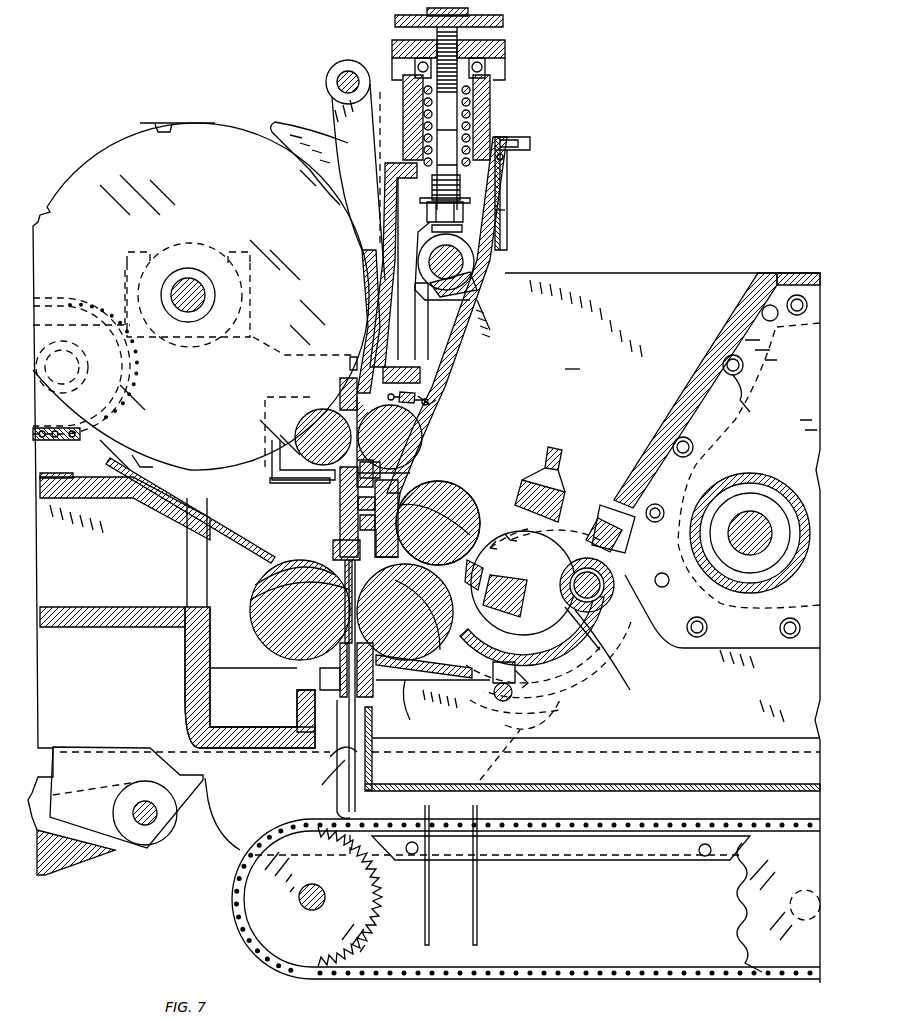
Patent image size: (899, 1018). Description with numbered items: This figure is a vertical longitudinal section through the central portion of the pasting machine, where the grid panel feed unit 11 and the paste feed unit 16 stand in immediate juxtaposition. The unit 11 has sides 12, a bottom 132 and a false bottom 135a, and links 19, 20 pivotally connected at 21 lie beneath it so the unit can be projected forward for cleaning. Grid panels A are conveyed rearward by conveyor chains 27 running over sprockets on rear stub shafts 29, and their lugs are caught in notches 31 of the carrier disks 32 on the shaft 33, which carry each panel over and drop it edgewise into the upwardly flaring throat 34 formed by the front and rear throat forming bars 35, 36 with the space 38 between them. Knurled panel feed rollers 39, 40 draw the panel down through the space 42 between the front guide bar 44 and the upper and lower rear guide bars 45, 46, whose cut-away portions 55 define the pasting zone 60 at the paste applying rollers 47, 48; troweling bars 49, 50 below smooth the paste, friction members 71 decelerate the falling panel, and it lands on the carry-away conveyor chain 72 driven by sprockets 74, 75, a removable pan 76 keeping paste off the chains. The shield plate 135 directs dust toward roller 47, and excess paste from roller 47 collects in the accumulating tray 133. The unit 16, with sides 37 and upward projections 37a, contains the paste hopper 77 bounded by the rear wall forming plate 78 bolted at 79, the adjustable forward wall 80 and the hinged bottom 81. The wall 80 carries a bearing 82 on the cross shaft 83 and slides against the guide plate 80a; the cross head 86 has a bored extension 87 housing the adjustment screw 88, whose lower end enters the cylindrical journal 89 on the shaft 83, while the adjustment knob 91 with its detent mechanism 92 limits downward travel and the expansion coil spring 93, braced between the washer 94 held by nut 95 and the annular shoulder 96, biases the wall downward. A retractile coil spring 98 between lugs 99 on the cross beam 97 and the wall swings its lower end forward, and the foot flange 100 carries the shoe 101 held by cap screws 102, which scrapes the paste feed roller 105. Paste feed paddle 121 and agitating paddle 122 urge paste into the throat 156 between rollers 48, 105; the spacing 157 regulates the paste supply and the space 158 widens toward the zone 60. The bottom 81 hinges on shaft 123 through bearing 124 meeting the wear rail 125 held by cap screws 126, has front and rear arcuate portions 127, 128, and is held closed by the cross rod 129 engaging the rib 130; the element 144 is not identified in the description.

The grid panel feed unit 11 is at (59, 682).
The sides 12 is at (80, 578).
The paste feed unit 16 is at (778, 269).
The link 19 is at (70, 870).
The link 20 is at (80, 755).
The pivotal connection 21 is at (140, 825).
The conveyor chains 27 is at (48, 443).
The rear sprocket carrying stub shafts 29 is at (125, 371).
The notches 31 is at (170, 125).
The transfer or carrier disks 32 is at (105, 155).
The shaft 33 is at (190, 283).
The receiving throat 34 is at (350, 357).
The front throat forming bar 35 is at (340, 395).
The rear throat forming bar 36 is at (400, 368).
The sides 37 is at (614, 275).
The upward projections 37a is at (500, 206).
The space 38 is at (345, 400).
The panel feed roller 39 is at (312, 436).
The panel feed roller 40 is at (412, 433).
The space 42 is at (345, 480).
The front guide bar 44 is at (358, 500).
The upper rear guide bar 45 is at (415, 480).
The lower rear guide bar 46 is at (360, 533).
The paste applying roller 47 is at (265, 630).
The paste applying roller 48 is at (440, 612).
The troweling bar 49 is at (300, 692).
The troweling bar 50 is at (365, 695).
The cut-away portions 55 is at (300, 572).
The pasting zone 60 is at (345, 600).
The friction members 71 is at (340, 762).
The carry-away conveyor chain 72 is at (628, 826).
The sprocket 74 is at (260, 930).
The sprocket 75 is at (735, 930).
The removable pan 76 is at (585, 792).
The paste hopper 77 is at (572, 361).
The rear wall forming plate 78 is at (680, 392).
The bolts 79 is at (693, 440).
The forward adjustable hopper wall 80 is at (470, 300).
The guide plate 80a is at (505, 216).
The bottom 81 is at (580, 650).
The bearing 82 is at (478, 290).
The cross shaft 83 is at (466, 260).
The cross head 86 is at (500, 162).
The vertically bored extension 87 is at (488, 104).
The adjustment screw 88 is at (458, 135).
The cylindrical journal 89 is at (470, 240).
The adjustment knob 91 is at (400, 48).
The detent mechanism 92 is at (503, 58).
The expansion coil spring 93 is at (490, 118).
The washer 94 is at (461, 190).
The nut 95 is at (464, 212).
The annular shoulder 96 is at (482, 68).
The cross beam 97 is at (375, 212).
The retractile coil spring 98 is at (420, 395).
The lugs 99 is at (430, 405).
The foot flange 100 is at (360, 518).
The shoe or scraper element 101 is at (410, 500).
The cap screws 102 is at (440, 478).
The paste feed roller 105 is at (460, 495).
The paste feed paddle 121 is at (480, 570).
The agitating paddle 122 is at (552, 447).
The shaft 123 is at (606, 578).
The bearing 124 is at (620, 632).
The wear rail 125 is at (590, 535).
The cap screws 126 is at (628, 540).
The front arcuate portion 127 is at (425, 705).
The rear arcuate portion 128 is at (490, 680).
The cross rod 129 is at (500, 702).
The rib 130 is at (520, 675).
The bottom 132 is at (105, 627).
The accumulating tray 133 is at (195, 722).
The shield plate 135 is at (200, 515).
The false bottom 135a is at (85, 520).
The hub 144 is at (757, 522).
The throat 156 is at (478, 540).
The roller spacing 157 is at (470, 515).
The space 158 is at (465, 690).
The grid panel A is at (467, 900).